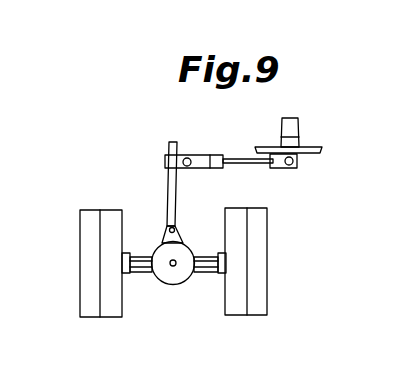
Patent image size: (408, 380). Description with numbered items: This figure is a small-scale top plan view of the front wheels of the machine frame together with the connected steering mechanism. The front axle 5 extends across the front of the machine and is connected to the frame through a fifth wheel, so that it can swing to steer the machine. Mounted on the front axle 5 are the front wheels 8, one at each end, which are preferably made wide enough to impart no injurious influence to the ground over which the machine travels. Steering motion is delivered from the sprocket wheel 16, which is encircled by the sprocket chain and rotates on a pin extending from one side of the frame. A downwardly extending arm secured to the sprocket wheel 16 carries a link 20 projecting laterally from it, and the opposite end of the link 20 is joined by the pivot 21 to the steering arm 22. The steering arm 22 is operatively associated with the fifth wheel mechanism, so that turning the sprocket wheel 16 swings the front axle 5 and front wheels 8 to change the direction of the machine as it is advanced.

The front axle 5 is at (202, 267).
The front wheels 8 is at (82, 258).
The sprocket wheel 16 is at (309, 153).
The link 20 is at (232, 158).
The pivot 21 is at (187, 157).
The steering arm 22 is at (176, 192).